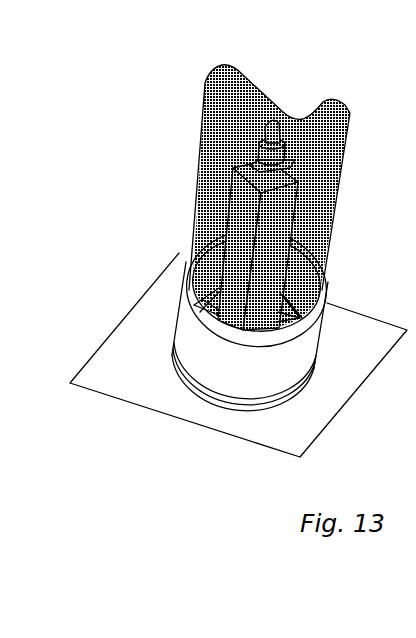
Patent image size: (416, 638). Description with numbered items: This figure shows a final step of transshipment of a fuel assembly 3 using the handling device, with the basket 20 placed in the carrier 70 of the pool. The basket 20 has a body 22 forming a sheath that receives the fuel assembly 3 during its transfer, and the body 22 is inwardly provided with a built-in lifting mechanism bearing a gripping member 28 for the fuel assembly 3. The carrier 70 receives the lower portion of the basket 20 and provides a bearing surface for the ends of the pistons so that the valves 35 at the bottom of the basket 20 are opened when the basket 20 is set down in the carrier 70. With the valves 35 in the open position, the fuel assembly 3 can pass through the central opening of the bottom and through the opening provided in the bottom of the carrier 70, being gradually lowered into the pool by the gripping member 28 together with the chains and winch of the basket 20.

The basket 20 is at (265, 233).
The body 22 is at (201, 114).
The gripping member 28 is at (287, 150).
The fuel assembly 3 is at (285, 208).
The valves 35 is at (207, 331).
The carrier 70 is at (302, 350).